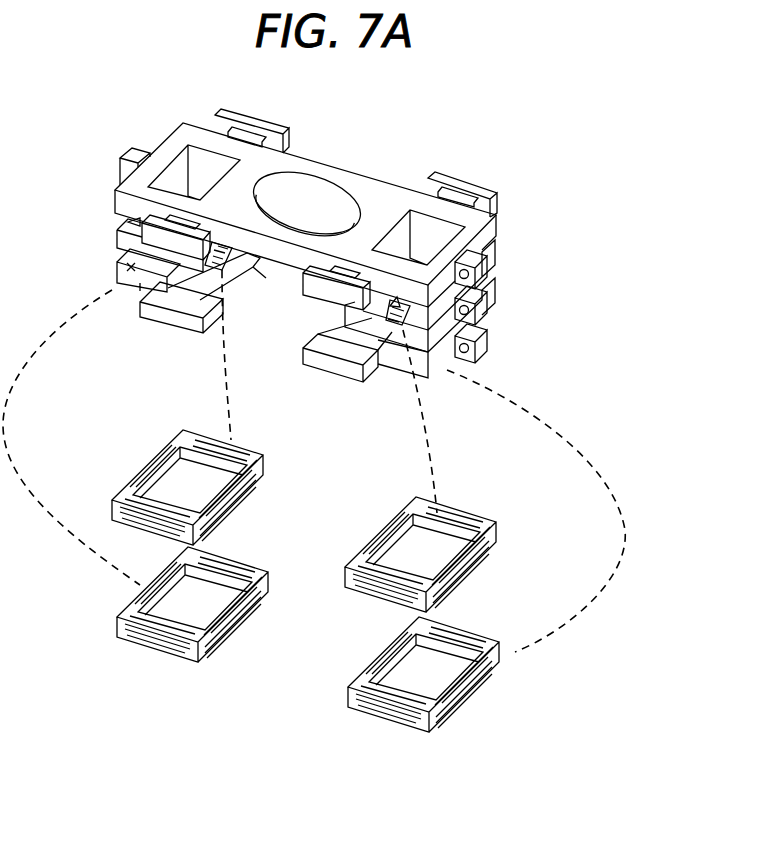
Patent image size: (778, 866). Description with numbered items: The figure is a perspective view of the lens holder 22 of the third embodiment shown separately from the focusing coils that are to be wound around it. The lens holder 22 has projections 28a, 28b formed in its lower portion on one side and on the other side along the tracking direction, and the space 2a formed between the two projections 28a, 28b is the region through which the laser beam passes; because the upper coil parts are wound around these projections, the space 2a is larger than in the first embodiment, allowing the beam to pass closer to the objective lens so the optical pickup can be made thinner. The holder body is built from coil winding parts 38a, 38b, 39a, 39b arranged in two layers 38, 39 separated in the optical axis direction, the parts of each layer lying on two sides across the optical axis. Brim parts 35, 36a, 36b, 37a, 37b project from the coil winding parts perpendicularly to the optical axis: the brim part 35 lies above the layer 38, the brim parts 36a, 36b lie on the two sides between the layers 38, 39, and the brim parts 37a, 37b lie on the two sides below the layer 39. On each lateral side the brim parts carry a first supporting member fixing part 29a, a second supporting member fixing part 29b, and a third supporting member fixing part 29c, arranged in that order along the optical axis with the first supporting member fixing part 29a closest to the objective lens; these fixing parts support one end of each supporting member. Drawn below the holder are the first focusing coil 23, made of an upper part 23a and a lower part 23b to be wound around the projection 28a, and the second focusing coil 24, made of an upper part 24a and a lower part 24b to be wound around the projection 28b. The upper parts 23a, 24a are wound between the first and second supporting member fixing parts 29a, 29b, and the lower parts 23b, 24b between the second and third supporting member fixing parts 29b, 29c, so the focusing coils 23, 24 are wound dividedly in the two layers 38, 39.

The lens holder 22 is at (178, 142).
The brim part 35 is at (498, 227).
The brim part 36a is at (116, 240).
The brim part 36b is at (498, 260).
The brim part 37a is at (116, 277).
The brim part 37b is at (498, 302).
The projection 28a is at (167, 260).
The projection 28b is at (395, 318).
The first supporting member fixing part 29a is at (478, 273).
The second supporting member fixing part 29b is at (478, 310).
The third supporting member fixing part 29c is at (478, 348).
The layer 38 is at (424, 142).
The coil winding part 38a is at (133, 223).
The coil winding part 38b is at (394, 304).
The layer 39 is at (205, 403).
The coil winding part 39a is at (165, 305).
The coil winding part 39b is at (299, 362).
The space 2a is at (277, 281).
The first focusing coil 23 is at (270, 422).
The upper part 23a is at (150, 467).
The lower part 23b is at (155, 655).
The second focusing coil 24 is at (617, 480).
The upper part 24a is at (470, 513).
The lower part 24b is at (380, 724).